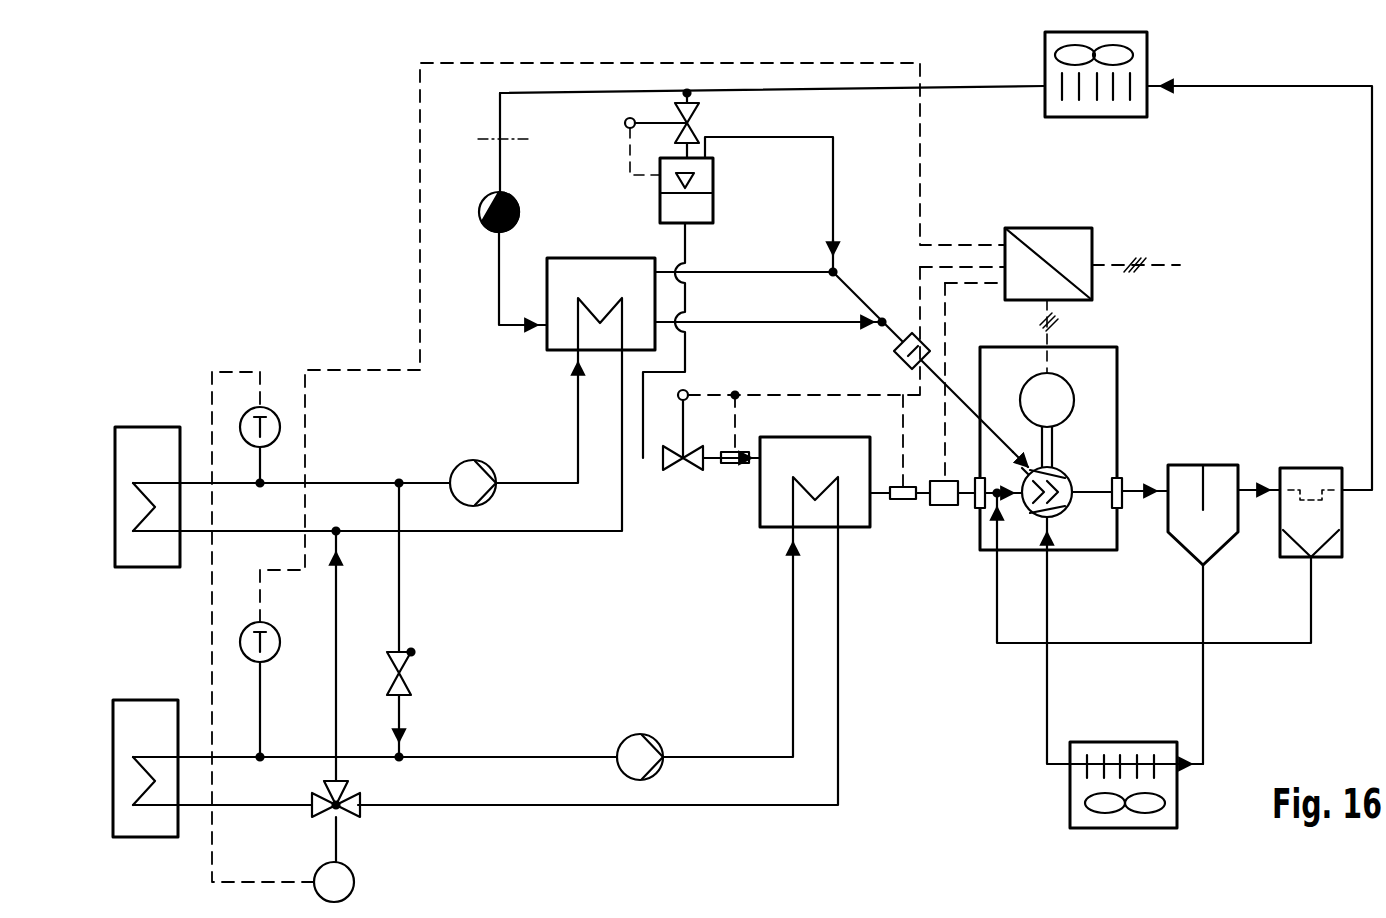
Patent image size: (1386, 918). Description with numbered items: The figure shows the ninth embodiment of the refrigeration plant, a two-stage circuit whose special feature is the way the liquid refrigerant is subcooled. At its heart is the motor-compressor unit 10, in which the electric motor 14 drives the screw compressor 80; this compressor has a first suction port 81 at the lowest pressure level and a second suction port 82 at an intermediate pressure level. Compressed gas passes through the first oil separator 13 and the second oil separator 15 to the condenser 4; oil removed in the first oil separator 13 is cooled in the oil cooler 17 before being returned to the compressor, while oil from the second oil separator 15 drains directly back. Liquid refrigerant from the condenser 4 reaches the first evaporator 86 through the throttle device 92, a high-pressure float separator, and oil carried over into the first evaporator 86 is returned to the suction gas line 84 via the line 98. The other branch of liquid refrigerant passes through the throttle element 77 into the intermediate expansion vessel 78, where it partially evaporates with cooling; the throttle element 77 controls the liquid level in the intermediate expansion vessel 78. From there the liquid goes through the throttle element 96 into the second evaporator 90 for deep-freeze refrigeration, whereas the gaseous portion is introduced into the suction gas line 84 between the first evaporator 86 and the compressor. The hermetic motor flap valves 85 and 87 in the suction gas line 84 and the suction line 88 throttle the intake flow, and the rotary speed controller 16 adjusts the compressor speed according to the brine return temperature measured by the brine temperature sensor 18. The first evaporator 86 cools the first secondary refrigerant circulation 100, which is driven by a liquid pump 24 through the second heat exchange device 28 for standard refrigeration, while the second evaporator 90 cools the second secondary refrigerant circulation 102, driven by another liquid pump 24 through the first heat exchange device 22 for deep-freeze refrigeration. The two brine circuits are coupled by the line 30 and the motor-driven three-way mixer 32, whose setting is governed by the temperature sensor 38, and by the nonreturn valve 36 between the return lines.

The condenser 4 is at (1043, 45).
The motor-compressor unit 10 is at (1133, 343).
The first oil separator 13 is at (1221, 465).
The electric motor 14 is at (1074, 394).
The second oil separator 15 is at (1310, 468).
The rotary speed controller 16 is at (1042, 228).
The oil cooler 17 is at (1120, 828).
The brine temperature sensor 18 is at (278, 655).
The first heat exchange device 22 is at (143, 837).
The liquid pump 24 is at (468, 462).
The second heat exchange device 28 is at (147, 427).
The line 30 is at (338, 638).
The motor-driven three-way mixer 32 is at (345, 812).
The nonreturn valve 36 is at (412, 680).
The temperature sensor 38 is at (276, 410).
The throttle element 77 is at (700, 116).
The intermediate expansion vessel 78 is at (714, 180).
The screw compressor 80 is at (1065, 512).
The first suction port 81 is at (1015, 500).
The second suction port 82 is at (1020, 460).
The suction gas line 84 is at (858, 292).
The hermetic motor flap valve 85 is at (897, 358).
The first evaporator 86 is at (716, 292).
The hermetic motor flap valve 87 is at (945, 506).
The suction line 88 is at (882, 500).
The second evaporator 90 is at (867, 482).
The throttle device 92 is at (519, 207).
The throttle element 96 is at (676, 447).
The oil line 98 is at (826, 320).
The first secondary refrigerant circulation 100 is at (360, 468).
The second secondary refrigerant circulation 102 is at (505, 818).